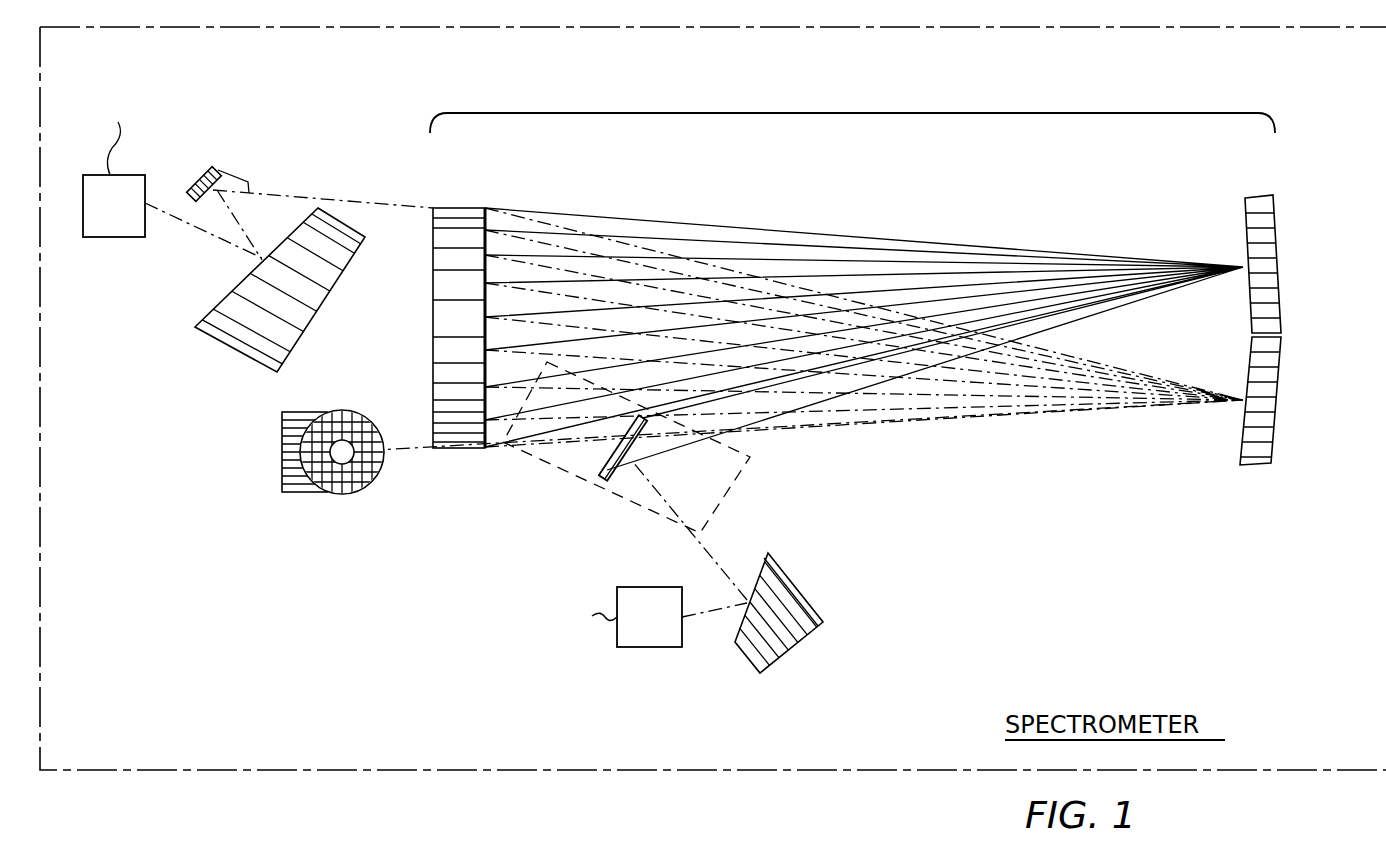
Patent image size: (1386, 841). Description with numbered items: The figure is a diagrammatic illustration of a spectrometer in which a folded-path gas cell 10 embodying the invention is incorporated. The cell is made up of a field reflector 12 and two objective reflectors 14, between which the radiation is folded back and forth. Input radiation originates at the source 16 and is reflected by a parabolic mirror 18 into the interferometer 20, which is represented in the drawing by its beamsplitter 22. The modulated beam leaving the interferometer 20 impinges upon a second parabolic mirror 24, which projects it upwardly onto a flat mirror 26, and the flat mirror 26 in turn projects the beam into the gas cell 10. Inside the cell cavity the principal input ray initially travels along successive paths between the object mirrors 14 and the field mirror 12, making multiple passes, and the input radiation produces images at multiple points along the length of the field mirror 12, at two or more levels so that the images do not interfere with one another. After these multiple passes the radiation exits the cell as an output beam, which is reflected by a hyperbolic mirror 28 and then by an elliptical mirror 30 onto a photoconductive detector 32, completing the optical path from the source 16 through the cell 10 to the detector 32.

The folded-path gas cell 10 is at (786, 113).
The field reflector 12 is at (446, 322).
The objective reflectors 14 is at (1284, 265).
The source 16 is at (635, 649).
The parabolic mirror 18 is at (806, 602).
The interferometer 20 is at (752, 490).
The beamsplitter 22 is at (607, 480).
The parabolic mirror 24 is at (343, 495).
The flat mirror 26 is at (300, 492).
The hyperbolic mirror 28 is at (216, 168).
The elliptical mirror 30 is at (242, 354).
The photoconductive detector 32 is at (106, 238).